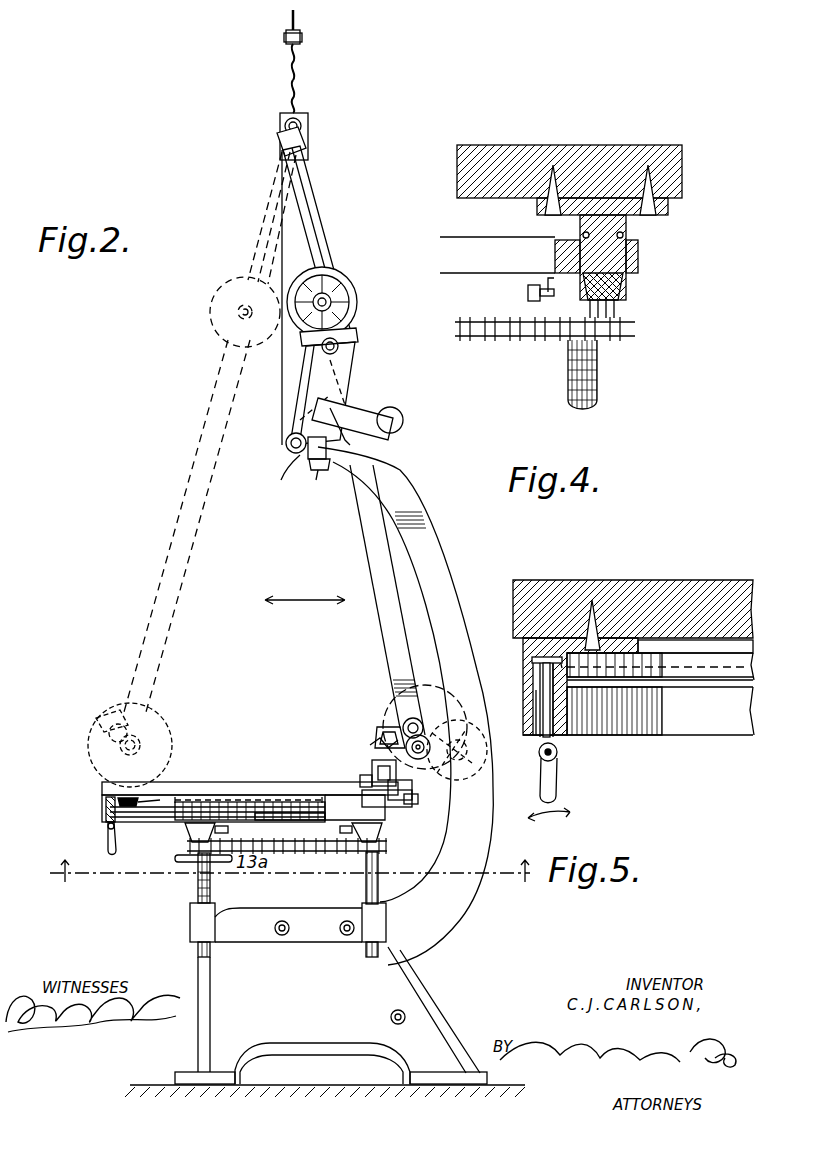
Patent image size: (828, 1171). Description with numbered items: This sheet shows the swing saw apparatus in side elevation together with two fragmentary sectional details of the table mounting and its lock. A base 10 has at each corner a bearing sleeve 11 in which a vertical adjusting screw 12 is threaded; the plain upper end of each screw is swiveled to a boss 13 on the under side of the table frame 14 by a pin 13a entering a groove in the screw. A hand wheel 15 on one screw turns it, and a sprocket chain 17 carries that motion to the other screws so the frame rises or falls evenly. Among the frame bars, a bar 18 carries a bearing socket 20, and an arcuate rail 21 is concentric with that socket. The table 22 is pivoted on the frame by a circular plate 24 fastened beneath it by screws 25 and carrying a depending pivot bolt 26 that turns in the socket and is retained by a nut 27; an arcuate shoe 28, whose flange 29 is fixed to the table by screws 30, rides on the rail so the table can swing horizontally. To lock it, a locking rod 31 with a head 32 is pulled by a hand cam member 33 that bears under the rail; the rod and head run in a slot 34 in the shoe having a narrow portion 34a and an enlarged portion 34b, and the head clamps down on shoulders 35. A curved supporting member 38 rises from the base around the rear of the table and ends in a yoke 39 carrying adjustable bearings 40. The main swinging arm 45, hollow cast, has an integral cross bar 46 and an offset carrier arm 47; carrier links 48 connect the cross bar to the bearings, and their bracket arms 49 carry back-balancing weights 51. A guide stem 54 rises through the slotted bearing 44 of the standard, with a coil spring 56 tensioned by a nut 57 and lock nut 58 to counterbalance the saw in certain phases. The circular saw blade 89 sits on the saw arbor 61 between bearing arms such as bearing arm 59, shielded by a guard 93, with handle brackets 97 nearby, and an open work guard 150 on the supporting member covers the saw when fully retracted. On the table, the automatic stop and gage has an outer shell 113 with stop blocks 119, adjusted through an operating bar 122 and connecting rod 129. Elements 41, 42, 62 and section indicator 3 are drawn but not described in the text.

In FIG. 2, the base 10 is at (325, 1022).
In FIG. 2, the bearing sleeve 11 is at (190, 918).
In FIG. 2, the adjusting screw 12 is at (212, 886).
In FIG. 4, the adjusting screw 12 is at (597, 362).
In FIG. 2, the boss 13 is at (190, 832).
In FIG. 4, the pin 13a is at (528, 292).
In FIG. 2, the table or bench frame 14 is at (292, 820).
In FIG. 4, the table or bench frame 14 is at (450, 270).
In FIG. 2, the hand wheel 15 is at (178, 862).
In FIG. 2, the sprocket chain 17 is at (290, 853).
In FIG. 4, the sprocket chain 17 is at (483, 340).
In FIG. 4, the bar 18 is at (638, 267).
In FIG. 4, the bearing socket 20 is at (626, 242).
In FIG. 5, the bearing socket 20 is at (530, 580).
In FIG. 2, the arcuate bar or rail 21 is at (106, 814).
In FIG. 5, the arcuate bar or rail 21 is at (532, 738).
In FIG. 2, the table or bench proper 22 is at (262, 782).
In FIG. 4, the circular plate 24 is at (668, 210).
In FIG. 4, the screws 25 is at (655, 183).
In FIG. 4, the pivot bolt 26 is at (600, 258).
In FIG. 4, the nut 27 is at (620, 286).
In FIG. 2, the arcuate bearing bar or shoe 28 is at (205, 797).
In FIG. 5, the arcuate bearing bar or shoe 28 is at (520, 648).
In FIG. 5, the flange 29 is at (690, 640).
In FIG. 5, the screws 30 is at (595, 640).
In FIG. 5, the locking rod 31 is at (554, 703).
In FIG. 5, the head 32 is at (657, 667).
In FIG. 2, the cam member 33 is at (108, 838).
In FIG. 5, the cam member 33 is at (557, 778).
In FIG. 5, the slot 34 is at (532, 660).
In FIG. 5, the narrow portion 34a is at (536, 698).
In FIG. 5, the enlarged portion 34b is at (562, 665).
In FIG. 5, the shoulders 35 is at (540, 678).
In FIG. 2, the curved supporting member 38 is at (455, 905).
In FIG. 2, the yoke 39 is at (408, 486).
In FIG. 2, the bearings 40 is at (322, 462).
In FIG. 2, the link 41 is at (338, 440).
In FIG. 2, the bracket 42 is at (300, 473).
In FIG. 2, the guide or bearing 44 is at (305, 115).
In FIG. 2, the main swinging arm 45 is at (208, 522).
In FIG. 2, the cross bar 46 is at (358, 340).
In FIG. 2, the carrier arm 47 is at (318, 193).
In FIG. 2, the carrier links 48 is at (292, 430).
In FIG. 2, the bracket arms 49 is at (385, 412).
In FIG. 2, the weights 51 is at (403, 418).
In FIG. 2, the guide stem 54 is at (297, 82).
In FIG. 2, the compression coil spring 56 is at (297, 60).
In FIG. 2, the nut 57 is at (300, 38).
In FIG. 2, the lock nut 58 is at (284, 37).
In FIG. 2, the bearing arm 59 is at (415, 725).
In FIG. 2, the saw arbor 61 is at (418, 754).
In FIG. 2, the pin 62 is at (276, 476).
In FIG. 2, the circular saw blade 89 is at (372, 743).
In FIG. 2, the guard 93 is at (420, 740).
In FIG. 2, the handle brackets 97 is at (378, 726).
In FIG. 2, the outer shell 113 is at (374, 762).
In FIG. 2, the stop blocks 119 is at (362, 778).
In FIG. 2, the operating bar 122 is at (116, 802).
In FIG. 2, the connecting rod 129 is at (418, 796).
In FIG. 2, the open work guard 150 is at (480, 762).
In FIG. 2, the section line 3 is at (290, 879).